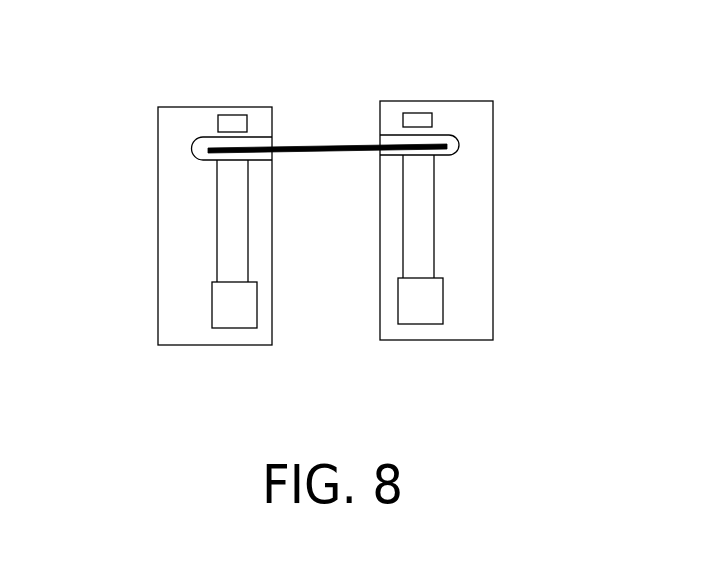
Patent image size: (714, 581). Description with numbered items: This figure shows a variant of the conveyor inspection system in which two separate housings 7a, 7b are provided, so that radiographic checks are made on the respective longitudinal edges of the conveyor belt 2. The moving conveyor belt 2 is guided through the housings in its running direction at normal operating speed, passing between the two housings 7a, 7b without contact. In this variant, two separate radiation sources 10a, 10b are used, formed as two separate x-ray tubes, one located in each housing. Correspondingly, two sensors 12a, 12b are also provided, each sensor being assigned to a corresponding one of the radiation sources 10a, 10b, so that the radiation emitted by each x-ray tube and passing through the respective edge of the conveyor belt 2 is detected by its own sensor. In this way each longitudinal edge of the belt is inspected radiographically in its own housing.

The housing 7a is at (158, 209).
The housing 7b is at (493, 218).
The sensor 12a is at (232, 115).
The sensor 12b is at (418, 113).
The radiation source 10a is at (233, 328).
The radiation source 10b is at (420, 324).
The conveyor belt 2 is at (325, 146).